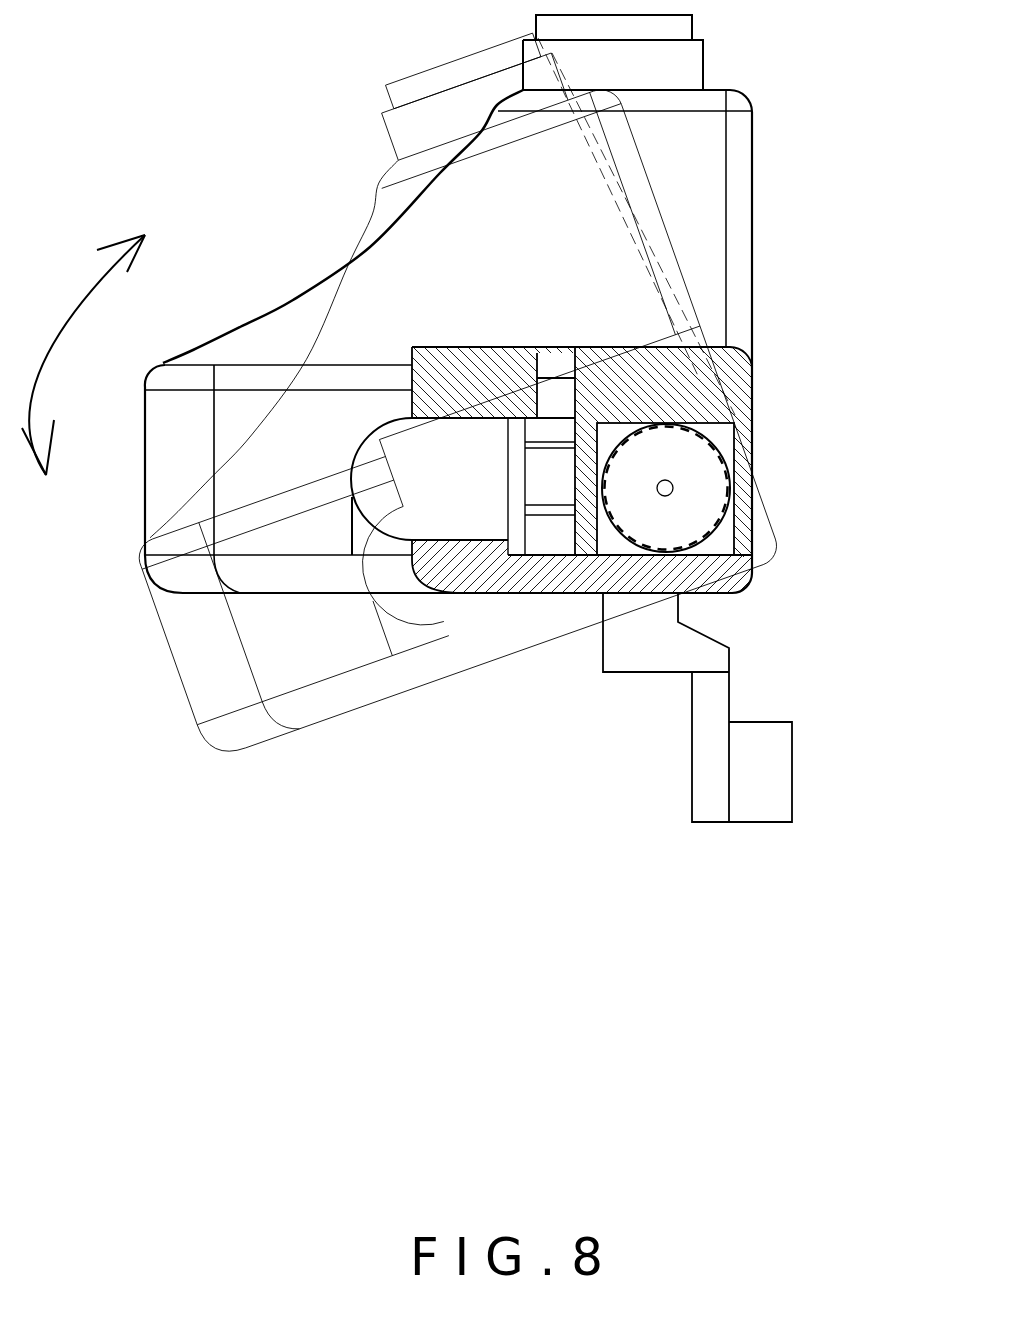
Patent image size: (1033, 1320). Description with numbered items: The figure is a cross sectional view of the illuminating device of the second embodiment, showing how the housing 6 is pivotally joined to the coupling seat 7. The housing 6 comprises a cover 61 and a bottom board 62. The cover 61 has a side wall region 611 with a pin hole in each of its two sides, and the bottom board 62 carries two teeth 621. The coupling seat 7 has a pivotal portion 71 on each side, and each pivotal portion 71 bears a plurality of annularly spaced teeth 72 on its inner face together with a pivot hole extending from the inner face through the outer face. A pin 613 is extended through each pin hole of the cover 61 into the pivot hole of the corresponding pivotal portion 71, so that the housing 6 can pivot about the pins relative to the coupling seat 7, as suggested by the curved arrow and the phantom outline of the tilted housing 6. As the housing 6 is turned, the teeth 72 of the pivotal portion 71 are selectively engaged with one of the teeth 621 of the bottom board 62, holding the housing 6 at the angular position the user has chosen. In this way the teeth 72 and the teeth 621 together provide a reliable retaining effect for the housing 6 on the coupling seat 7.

The housing 6 is at (828, 278).
The cover 61 is at (752, 378).
The receiving groove 611 is at (725, 437).
The pin 613 is at (673, 488).
The bottom board 62 is at (545, 567).
The teeth 621 is at (668, 553).
The coupling seat 7 is at (657, 648).
The pivotal portion 71 is at (683, 508).
The teeth 72 is at (673, 553).